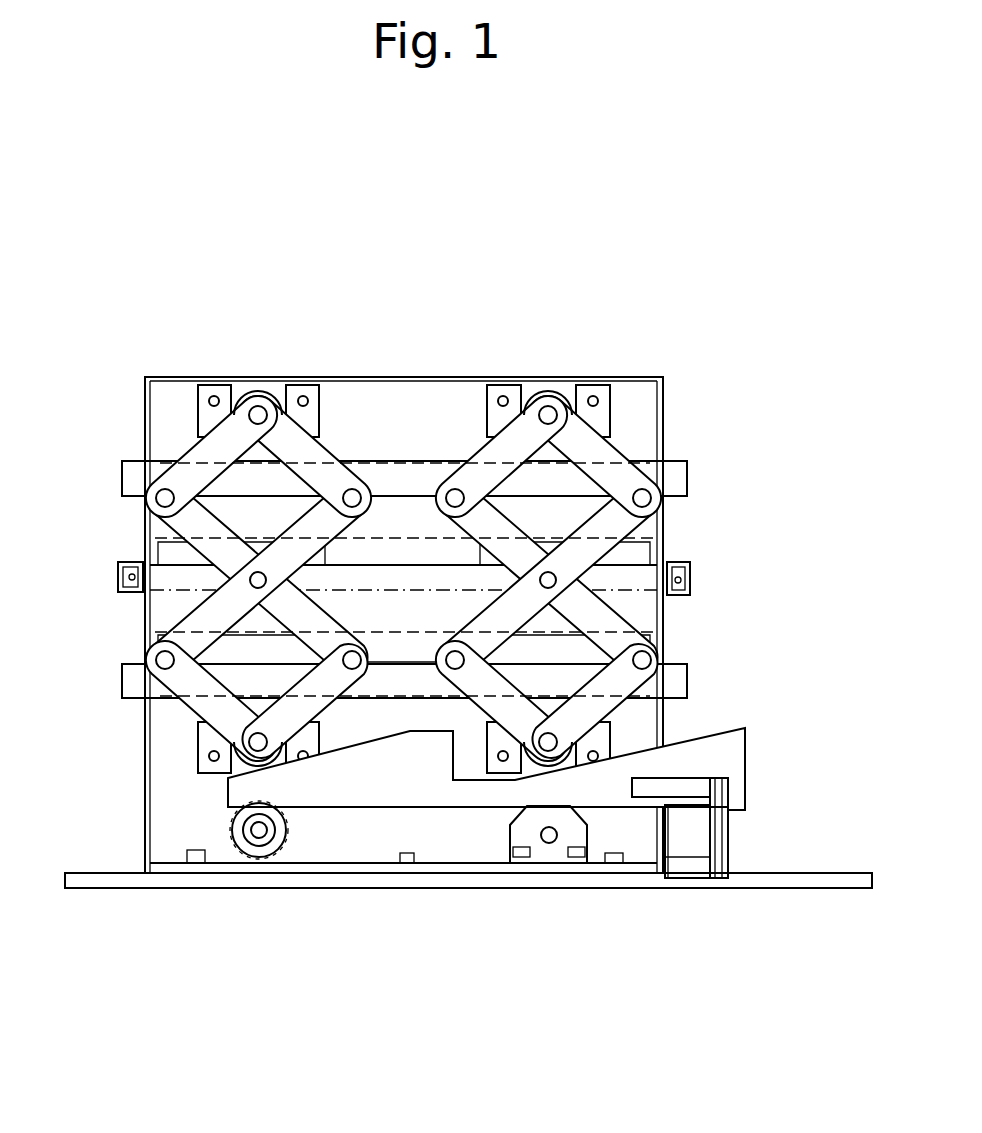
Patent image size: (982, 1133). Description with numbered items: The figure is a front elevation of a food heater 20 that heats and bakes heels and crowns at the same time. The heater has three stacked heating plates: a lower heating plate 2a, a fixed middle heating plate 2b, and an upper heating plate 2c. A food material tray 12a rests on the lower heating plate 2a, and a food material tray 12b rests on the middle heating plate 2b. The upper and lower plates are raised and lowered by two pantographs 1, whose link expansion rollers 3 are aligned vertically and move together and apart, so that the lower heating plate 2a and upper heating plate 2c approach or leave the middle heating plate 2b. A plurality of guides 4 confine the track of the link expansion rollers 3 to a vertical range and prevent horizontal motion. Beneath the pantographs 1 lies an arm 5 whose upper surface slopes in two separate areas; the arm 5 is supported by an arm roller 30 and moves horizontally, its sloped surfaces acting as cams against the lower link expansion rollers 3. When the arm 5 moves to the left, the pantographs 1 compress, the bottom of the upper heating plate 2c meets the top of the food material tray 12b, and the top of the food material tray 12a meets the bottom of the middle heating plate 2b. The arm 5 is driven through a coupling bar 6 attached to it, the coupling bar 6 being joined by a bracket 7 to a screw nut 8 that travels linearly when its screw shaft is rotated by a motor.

The pantograph 1 is at (200, 450).
The lower heating plate 2a is at (672, 682).
The middle heating plate 2b is at (645, 580).
The upper heating plate 2c is at (670, 483).
The link expansion roller 3 is at (263, 387).
The guide 4 is at (212, 395).
The arm 5 is at (430, 790).
The coupling bar 6 is at (686, 790).
The bracket 7 is at (722, 840).
The screw nut 8 is at (686, 835).
The food material tray 12a is at (200, 650).
The food material tray 12b is at (165, 545).
The food heater 20 is at (714, 394).
The arm roller 30 is at (255, 858).